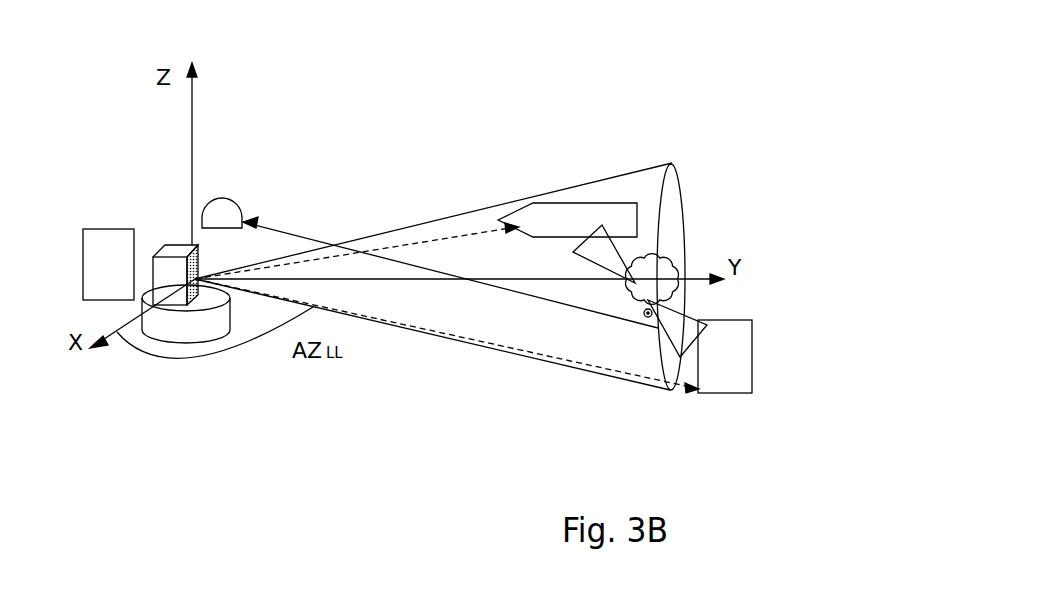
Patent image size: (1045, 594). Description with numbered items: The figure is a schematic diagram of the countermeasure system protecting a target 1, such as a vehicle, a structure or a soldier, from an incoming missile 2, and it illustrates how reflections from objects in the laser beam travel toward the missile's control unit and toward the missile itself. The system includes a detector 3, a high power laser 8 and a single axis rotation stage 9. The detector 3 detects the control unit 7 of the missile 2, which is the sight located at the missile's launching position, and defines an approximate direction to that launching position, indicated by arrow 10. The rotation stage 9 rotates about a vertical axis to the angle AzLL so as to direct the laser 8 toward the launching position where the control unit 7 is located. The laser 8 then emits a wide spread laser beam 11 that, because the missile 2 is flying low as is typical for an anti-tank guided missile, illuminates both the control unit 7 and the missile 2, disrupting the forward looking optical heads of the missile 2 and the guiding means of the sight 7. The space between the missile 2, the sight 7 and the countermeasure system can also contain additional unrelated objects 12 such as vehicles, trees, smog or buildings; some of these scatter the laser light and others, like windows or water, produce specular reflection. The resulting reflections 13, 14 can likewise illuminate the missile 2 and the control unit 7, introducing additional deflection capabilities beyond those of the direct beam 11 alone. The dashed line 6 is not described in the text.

The target 1 is at (100, 229).
The missile 2 is at (552, 220).
The detector 3 is at (225, 213).
The missile trajectory 6 is at (468, 233).
The control unit 7 is at (738, 353).
The high power laser 8 is at (172, 250).
The single axis rotation stage 9 is at (198, 331).
The arrow indicating approximate direction to launching position 10 is at (308, 230).
The wide spread laser beam 11 is at (638, 192).
The unrelated objects 12 is at (685, 238).
The reflection 13 is at (597, 245).
The reflection 14 is at (688, 306).